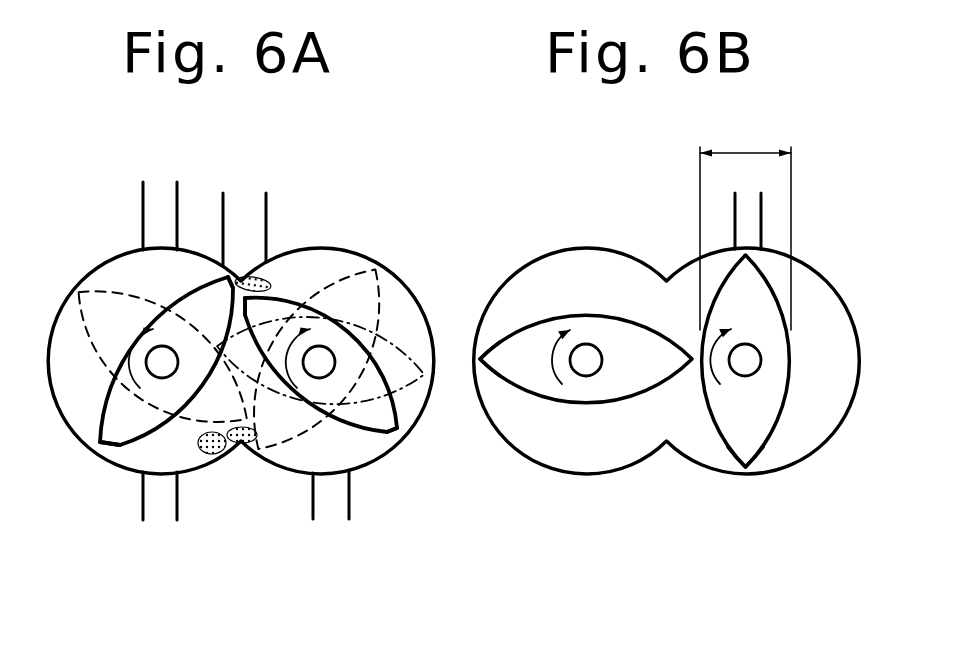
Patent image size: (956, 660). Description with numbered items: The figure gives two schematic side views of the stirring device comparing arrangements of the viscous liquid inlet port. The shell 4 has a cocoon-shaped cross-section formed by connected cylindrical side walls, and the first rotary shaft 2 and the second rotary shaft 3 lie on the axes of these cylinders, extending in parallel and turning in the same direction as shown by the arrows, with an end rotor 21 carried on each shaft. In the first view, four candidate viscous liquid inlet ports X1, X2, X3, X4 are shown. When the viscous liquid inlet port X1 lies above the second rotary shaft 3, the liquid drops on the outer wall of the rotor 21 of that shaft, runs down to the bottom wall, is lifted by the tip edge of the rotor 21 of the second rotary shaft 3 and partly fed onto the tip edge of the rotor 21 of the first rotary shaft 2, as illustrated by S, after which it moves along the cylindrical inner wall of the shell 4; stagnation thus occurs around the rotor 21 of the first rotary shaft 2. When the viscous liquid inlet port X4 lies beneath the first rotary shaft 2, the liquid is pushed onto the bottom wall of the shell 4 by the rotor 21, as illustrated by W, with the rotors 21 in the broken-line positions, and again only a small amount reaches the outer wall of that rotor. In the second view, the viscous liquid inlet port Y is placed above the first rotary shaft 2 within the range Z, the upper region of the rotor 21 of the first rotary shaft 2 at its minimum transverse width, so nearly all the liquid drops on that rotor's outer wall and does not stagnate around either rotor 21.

In FIG. 6A, the first rotary shaft 2 is at (319, 362).
In FIG. 6B, the first rotary shaft 2 is at (747, 364).
In FIG. 6A, the second rotary shaft 3 is at (162, 362).
In FIG. 6B, the second rotary shaft 3 is at (586, 362).
In FIG. 6A, the shell 4 is at (402, 276).
In FIG. 6B, the shell 4 is at (537, 252).
In FIG. 6A, the end rotor 21 is at (123, 448).
In FIG. 6B, the end rotor 21 is at (510, 385).
In FIG. 6A, the viscous liquid fed onto the tip edge of the rotor of the first rotary shaft S is at (262, 284).
In FIG. 6A, the viscous liquid fed onto the bottom wall of the shell W is at (223, 458).
In FIG. 6A, the viscous liquid inlet port X1 is at (158, 222).
In FIG. 6A, the viscous liquid inlet port X2 is at (250, 230).
In FIG. 6A, the viscous liquid inlet port X3 is at (157, 502).
In FIG. 6A, the viscous liquid inlet port X4 is at (322, 502).
In FIG. 6B, the viscous liquid inlet port Y is at (750, 230).
In FIG. 6B, the range Z is at (745, 225).